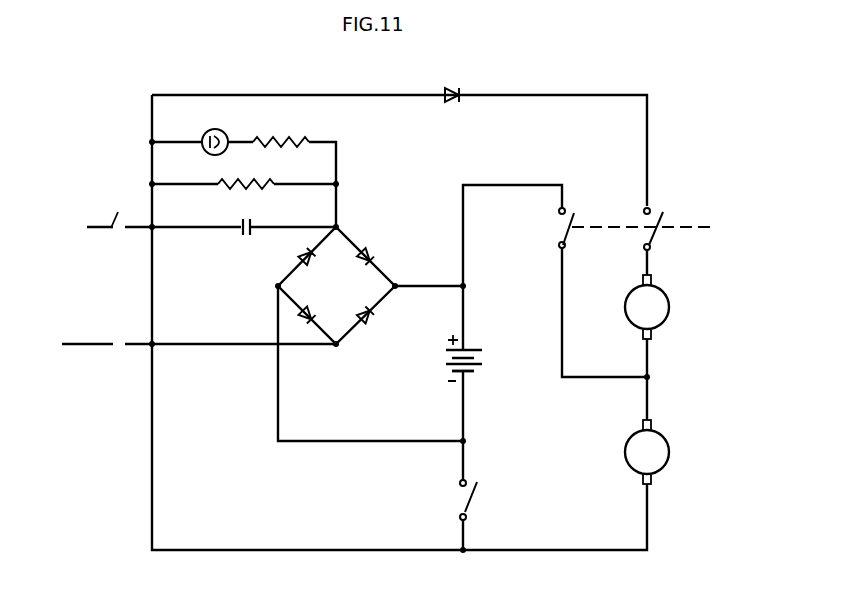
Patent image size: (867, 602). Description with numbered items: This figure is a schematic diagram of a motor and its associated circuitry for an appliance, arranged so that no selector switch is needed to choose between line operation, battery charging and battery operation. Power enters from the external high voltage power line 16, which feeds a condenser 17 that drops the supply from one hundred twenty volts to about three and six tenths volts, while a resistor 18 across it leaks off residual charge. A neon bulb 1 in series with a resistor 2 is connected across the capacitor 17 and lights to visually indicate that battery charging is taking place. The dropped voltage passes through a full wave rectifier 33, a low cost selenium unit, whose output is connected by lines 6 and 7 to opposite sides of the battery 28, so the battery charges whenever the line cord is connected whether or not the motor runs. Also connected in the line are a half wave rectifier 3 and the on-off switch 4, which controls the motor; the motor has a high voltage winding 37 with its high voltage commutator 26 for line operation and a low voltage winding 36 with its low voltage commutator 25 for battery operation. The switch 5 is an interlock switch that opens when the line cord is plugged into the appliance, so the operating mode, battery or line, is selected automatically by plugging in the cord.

The neon bulb 1 is at (224, 132).
The resistor 2 is at (295, 140).
The half wave rectifier 3 is at (452, 92).
The on-off switch 4 is at (578, 213).
The interlock switch 5 is at (478, 496).
The line 6 is at (466, 326).
The line 7 is at (355, 440).
The high voltage power line 16 is at (130, 452).
The condenser 17 is at (236, 240).
The resistor 18 is at (272, 180).
The low voltage commutator 25 is at (660, 480).
The high voltage commutator 26 is at (652, 279).
The battery 28 is at (482, 371).
The full wave rectifier 33 is at (380, 302).
The low voltage winding 36 is at (668, 437).
The high voltage winding 37 is at (670, 306).